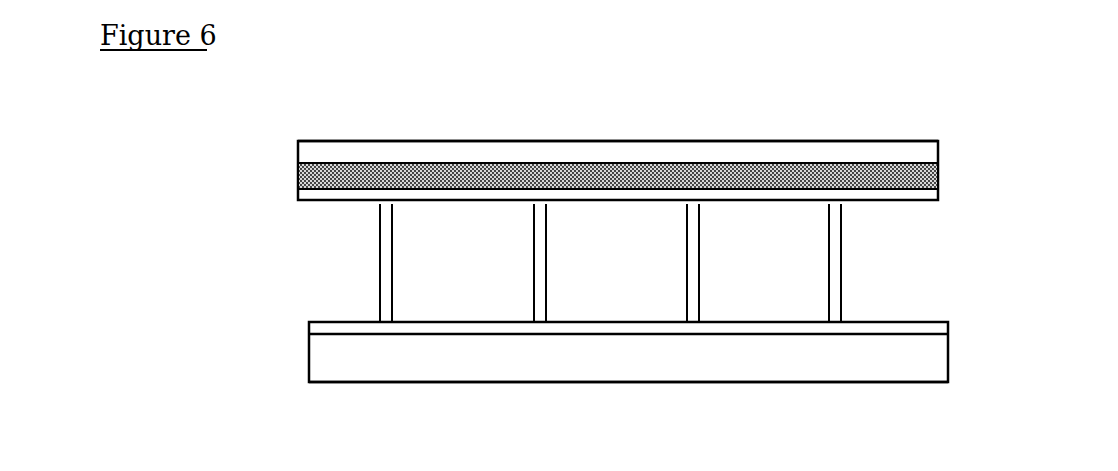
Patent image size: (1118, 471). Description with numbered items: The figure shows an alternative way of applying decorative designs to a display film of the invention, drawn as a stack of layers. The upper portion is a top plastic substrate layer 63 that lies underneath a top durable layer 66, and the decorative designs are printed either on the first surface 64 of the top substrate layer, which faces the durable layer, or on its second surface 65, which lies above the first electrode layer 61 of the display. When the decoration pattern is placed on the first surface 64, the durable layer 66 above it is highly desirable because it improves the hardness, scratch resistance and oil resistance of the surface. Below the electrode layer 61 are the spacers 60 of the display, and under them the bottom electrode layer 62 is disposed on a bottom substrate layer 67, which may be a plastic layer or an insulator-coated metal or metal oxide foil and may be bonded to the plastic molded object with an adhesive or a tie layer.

The support posts / spacers 60 is at (428, 292).
The first electrode layer 61 is at (938, 200).
The bottom electrode layer 62 is at (948, 323).
The top plastic substrate layer 63 is at (335, 176).
The first surface 64 is at (333, 155).
The second surface 65 is at (333, 198).
The top durable layer 66 is at (442, 153).
The bottom substrate layer 67 is at (817, 370).